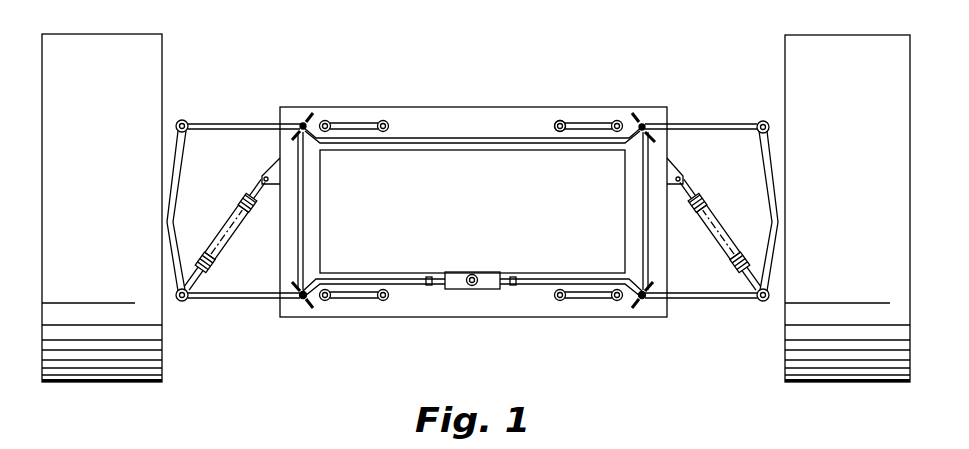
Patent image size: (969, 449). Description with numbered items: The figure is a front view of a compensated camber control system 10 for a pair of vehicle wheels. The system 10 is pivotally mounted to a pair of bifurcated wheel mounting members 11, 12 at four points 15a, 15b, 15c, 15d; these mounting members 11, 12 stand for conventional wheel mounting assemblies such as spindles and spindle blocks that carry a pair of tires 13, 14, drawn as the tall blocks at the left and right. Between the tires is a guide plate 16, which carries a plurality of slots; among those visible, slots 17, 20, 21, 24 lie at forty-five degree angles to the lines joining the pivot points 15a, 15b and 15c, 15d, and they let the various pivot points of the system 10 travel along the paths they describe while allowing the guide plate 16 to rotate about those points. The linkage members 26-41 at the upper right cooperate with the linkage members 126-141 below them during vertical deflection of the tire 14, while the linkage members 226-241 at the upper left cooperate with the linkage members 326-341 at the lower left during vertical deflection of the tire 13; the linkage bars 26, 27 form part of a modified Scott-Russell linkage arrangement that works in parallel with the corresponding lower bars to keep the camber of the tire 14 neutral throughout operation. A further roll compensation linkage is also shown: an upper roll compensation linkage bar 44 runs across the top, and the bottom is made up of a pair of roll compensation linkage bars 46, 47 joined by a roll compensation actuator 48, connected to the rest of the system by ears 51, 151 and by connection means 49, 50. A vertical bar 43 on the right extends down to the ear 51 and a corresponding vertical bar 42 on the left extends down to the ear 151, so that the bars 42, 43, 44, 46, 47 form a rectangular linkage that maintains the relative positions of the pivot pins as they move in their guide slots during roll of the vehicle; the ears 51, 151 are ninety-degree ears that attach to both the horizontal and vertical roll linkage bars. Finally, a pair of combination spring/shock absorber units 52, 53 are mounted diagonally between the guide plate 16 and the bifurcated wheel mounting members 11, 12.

The compensated camber control system 10 is at (528, 39).
The bifurcated wheel mounting member 11 is at (173, 160).
The bifurcated wheel mounting member 12 is at (778, 155).
The tire 13 is at (116, 74).
The tire 14 is at (866, 74).
The pivot mounting point 15a is at (192, 110).
The pivot mounting point 15b is at (182, 312).
The pivot mounting point 15c is at (762, 112).
The pivot mounting point 15d is at (763, 310).
The guide plate 16 is at (514, 107).
The slot 17 is at (305, 113).
The slot 20 is at (637, 120).
The slot 21 is at (293, 284).
The slot 24 is at (652, 288).
The linkage bar 26 is at (563, 121).
The linkage bar 27 is at (710, 122).
The vertical bar 42 is at (305, 218).
The vertical bar 43 is at (641, 198).
The upper roll compensation linkage bar 44 is at (428, 138).
The roll compensation linkage bar 46 is at (340, 280).
The roll compensation linkage bar 47 is at (540, 280).
The roll compensation actuator 48 is at (480, 274).
The connection means 49 is at (432, 289).
The connection means 50 is at (512, 291).
The ear 51 is at (655, 310).
The combination spring/shock absorber unit 52 is at (223, 218).
The combination spring/shock absorber unit 53 is at (722, 218).
The ear 151 is at (298, 310).
The linkage members 226-241 is at (372, 92).
The linkage members 26-41 is at (604, 96).
The linkage members 326-341 is at (303, 318).
The linkage members 126-141 is at (600, 325).